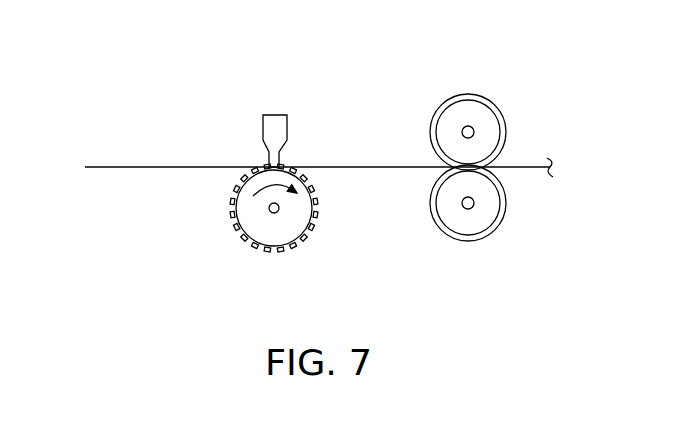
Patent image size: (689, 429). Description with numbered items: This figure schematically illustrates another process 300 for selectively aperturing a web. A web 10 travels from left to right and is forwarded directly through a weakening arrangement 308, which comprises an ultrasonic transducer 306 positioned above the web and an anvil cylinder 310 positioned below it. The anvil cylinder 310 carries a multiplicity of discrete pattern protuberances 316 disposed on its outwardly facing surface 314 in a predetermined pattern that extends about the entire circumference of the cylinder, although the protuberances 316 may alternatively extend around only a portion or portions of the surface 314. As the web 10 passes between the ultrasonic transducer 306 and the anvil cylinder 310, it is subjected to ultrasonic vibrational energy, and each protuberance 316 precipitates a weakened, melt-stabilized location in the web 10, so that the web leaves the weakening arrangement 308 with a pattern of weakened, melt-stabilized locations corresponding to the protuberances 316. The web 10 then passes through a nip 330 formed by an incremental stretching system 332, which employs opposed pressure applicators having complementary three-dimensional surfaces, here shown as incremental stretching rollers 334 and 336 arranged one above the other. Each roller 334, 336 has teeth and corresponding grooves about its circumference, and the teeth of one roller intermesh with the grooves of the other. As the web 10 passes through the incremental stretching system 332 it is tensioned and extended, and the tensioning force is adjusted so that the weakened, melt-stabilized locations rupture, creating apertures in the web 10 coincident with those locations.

The process for selectively aperturing a web 300 is at (104, 91).
The web 10 is at (175, 167).
The ultrasonic transducer 306 is at (273, 113).
The weakening arrangement 308 is at (255, 245).
The anvil cylinder 310 is at (268, 232).
The outwardly facing surface 314 is at (255, 221).
The pattern protuberances 316 is at (233, 208).
The nip 330 is at (466, 152).
The incremental stretching system 332 is at (486, 152).
The incremental stretching roller 334 is at (490, 120).
The incremental stretching roller 336 is at (490, 213).